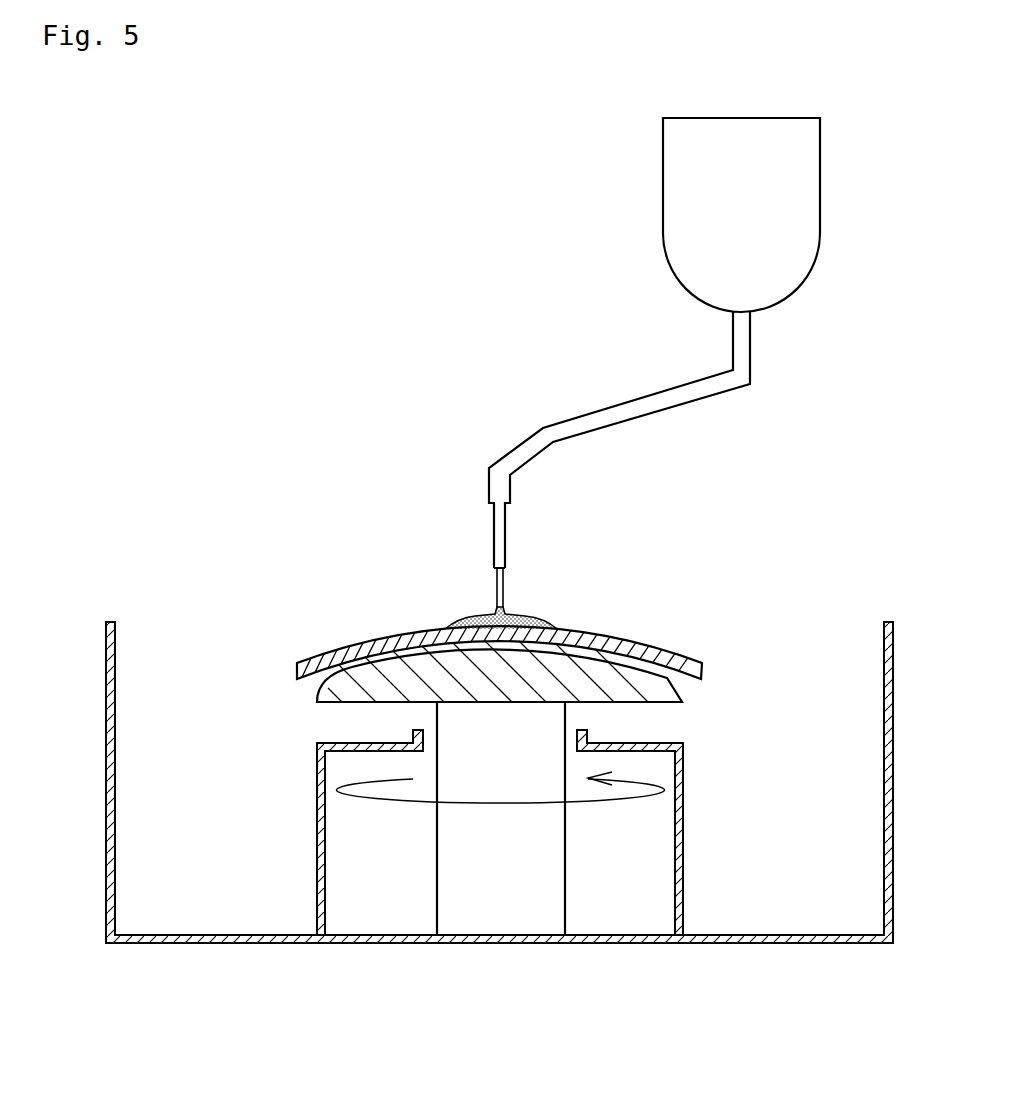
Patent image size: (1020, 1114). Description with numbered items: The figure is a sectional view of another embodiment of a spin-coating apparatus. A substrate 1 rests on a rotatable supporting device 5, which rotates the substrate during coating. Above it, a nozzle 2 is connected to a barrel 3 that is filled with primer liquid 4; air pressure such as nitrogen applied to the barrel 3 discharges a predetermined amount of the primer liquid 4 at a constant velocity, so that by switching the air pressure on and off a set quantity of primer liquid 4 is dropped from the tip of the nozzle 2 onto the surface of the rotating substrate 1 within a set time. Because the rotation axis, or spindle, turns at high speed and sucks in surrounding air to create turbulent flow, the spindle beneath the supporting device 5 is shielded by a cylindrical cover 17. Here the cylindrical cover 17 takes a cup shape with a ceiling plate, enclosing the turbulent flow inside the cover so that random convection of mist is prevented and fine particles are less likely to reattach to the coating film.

The substrate 1 is at (632, 641).
The nozzle 2 is at (498, 540).
The barrel 3 is at (730, 222).
The primer liquid 4 is at (516, 615).
The rotatable supporting device 5 is at (684, 691).
The cylindrical cover 17 is at (683, 845).